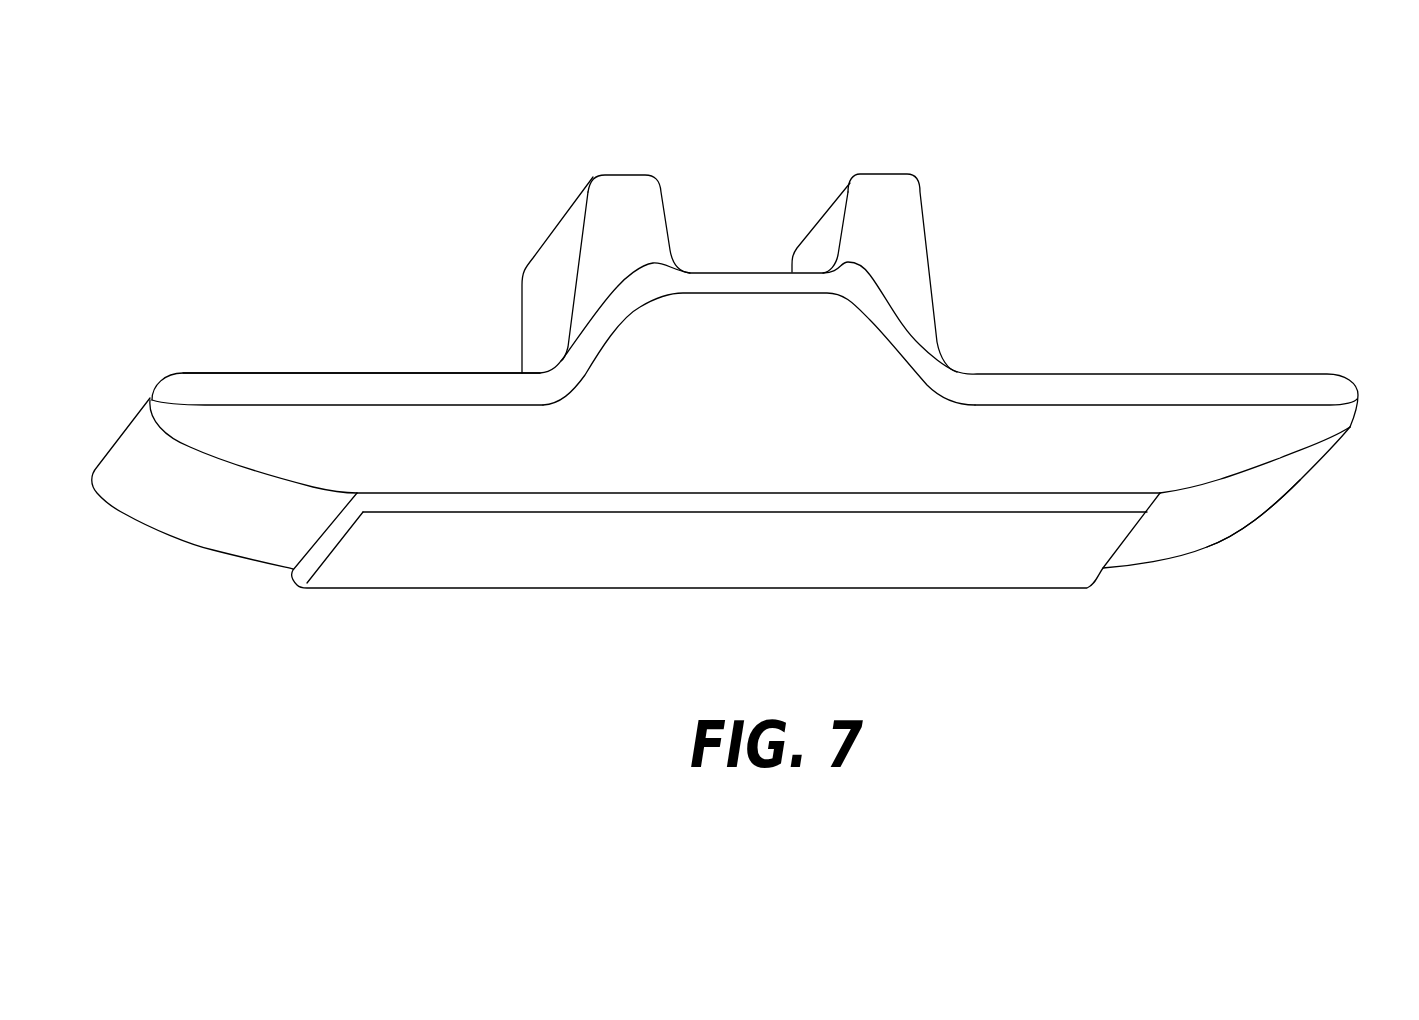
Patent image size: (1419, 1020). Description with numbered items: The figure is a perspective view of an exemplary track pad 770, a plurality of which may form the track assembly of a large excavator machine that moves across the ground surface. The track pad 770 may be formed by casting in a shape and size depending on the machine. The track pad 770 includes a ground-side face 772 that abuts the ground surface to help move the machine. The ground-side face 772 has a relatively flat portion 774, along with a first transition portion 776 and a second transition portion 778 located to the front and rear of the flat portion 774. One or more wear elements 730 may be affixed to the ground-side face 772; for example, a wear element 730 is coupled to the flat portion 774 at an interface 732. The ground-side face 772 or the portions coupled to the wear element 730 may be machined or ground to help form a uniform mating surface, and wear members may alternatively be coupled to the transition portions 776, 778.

The track pad 770 is at (1071, 153).
The ground-side face 772 is at (1235, 501).
The flat portion 774 is at (543, 493).
The first transition portion 776 is at (200, 503).
The second transition portion 778 is at (1300, 475).
The wear element 730 is at (453, 567).
The interface 732 is at (850, 493).